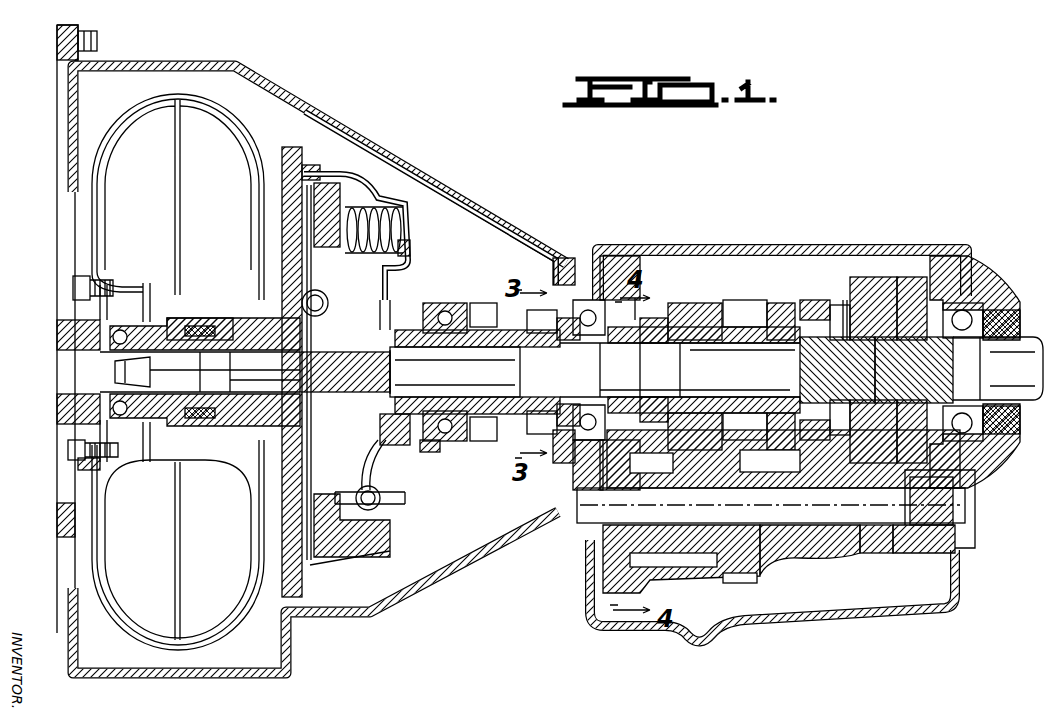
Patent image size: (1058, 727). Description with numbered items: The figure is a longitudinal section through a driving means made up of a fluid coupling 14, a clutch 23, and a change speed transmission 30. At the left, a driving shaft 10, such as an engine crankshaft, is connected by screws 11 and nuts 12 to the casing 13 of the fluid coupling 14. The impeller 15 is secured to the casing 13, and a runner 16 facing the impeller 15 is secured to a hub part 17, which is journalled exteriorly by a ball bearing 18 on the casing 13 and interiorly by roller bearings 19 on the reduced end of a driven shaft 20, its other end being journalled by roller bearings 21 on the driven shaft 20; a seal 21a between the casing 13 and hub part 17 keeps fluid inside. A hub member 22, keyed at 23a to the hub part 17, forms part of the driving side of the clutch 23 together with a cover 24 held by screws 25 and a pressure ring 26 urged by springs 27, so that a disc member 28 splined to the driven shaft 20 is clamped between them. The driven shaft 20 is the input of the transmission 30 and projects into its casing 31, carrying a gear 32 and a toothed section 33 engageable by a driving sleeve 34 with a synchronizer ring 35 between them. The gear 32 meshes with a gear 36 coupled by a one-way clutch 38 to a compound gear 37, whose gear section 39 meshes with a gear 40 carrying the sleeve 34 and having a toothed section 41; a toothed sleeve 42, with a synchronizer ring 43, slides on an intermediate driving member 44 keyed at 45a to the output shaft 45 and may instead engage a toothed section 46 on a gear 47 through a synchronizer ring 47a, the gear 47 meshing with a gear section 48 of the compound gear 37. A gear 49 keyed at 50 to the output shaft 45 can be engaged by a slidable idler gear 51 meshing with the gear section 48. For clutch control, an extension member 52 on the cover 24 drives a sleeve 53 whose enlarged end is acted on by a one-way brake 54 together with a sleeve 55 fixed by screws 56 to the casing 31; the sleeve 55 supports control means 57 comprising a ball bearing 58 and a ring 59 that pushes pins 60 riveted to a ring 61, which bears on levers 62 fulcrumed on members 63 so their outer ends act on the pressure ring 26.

The driving shaft 10 is at (57, 402).
The screws 11 is at (78, 464).
The nuts 12 is at (68, 450).
The casing 13 is at (92, 210).
The fluid coupling 14 is at (290, 117).
The impeller 15 is at (152, 153).
The runner 16 is at (222, 157).
The hub part 17 is at (175, 318).
The ball bearing 18 is at (147, 275).
The roller bearings 19 is at (135, 368).
The driven shaft 20 is at (266, 381).
The roller bearings 21 is at (339, 372).
The seal 21a is at (212, 430).
The hub member 22 is at (320, 176).
The clutch 23 is at (386, 179).
The key 23a is at (247, 318).
The cover 24 is at (410, 248).
The screws 25 is at (347, 134).
The pressure ring 26 is at (390, 552).
The springs 27 is at (401, 230).
The disc member 28 is at (312, 447).
The transmission 30 is at (667, 230).
The casing 31 is at (750, 245).
The gear 32 is at (612, 323).
The toothed section 33 is at (648, 323).
The driving sleeve 34 is at (697, 303).
The synchronizer ring 35 is at (672, 318).
The gear 36 is at (657, 580).
The compound gear 37 is at (780, 543).
The one-way clutch 38 is at (657, 535).
The gear section 39 is at (755, 578).
The gear 40 is at (742, 300).
The toothed section 41 is at (788, 303).
The toothed sleeve 42 is at (848, 305).
The synchronizer ring 43 is at (838, 308).
The intermediate driving member 44 is at (858, 381).
The output shaft 45 is at (915, 381).
The key 45a is at (797, 357).
The toothed section 46 is at (852, 300).
The gear 47 is at (899, 277).
The synchronizer ring 47a is at (845, 300).
The gear section 48 is at (875, 560).
The gear 49 is at (922, 262).
The key 50 is at (945, 352).
The idler gear 51 is at (907, 575).
The extension member 52 is at (397, 300).
The sleeve 53 is at (453, 347).
The one-way brake 54 is at (492, 442).
The sleeve 55 is at (535, 465).
The screws 56 is at (547, 280).
The control means 57 is at (467, 300).
The ball bearing 58 is at (443, 443).
The ring 59 is at (428, 452).
The pins 60 is at (392, 447).
The ring 61 is at (378, 446).
The levers 62 is at (382, 389).
The members 63 is at (400, 485).